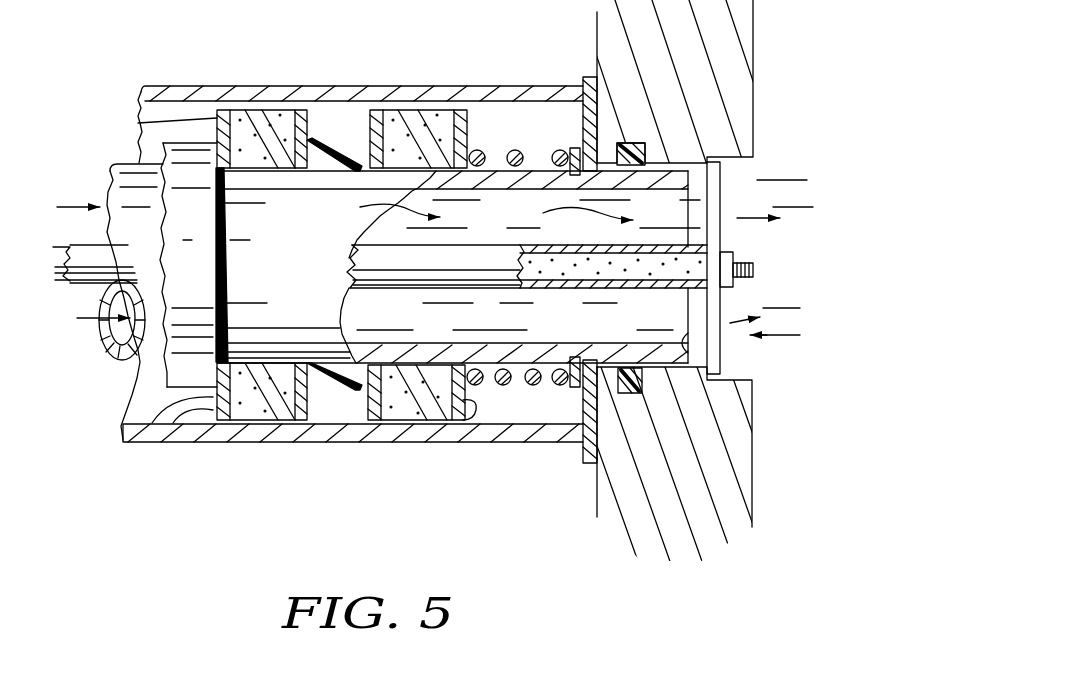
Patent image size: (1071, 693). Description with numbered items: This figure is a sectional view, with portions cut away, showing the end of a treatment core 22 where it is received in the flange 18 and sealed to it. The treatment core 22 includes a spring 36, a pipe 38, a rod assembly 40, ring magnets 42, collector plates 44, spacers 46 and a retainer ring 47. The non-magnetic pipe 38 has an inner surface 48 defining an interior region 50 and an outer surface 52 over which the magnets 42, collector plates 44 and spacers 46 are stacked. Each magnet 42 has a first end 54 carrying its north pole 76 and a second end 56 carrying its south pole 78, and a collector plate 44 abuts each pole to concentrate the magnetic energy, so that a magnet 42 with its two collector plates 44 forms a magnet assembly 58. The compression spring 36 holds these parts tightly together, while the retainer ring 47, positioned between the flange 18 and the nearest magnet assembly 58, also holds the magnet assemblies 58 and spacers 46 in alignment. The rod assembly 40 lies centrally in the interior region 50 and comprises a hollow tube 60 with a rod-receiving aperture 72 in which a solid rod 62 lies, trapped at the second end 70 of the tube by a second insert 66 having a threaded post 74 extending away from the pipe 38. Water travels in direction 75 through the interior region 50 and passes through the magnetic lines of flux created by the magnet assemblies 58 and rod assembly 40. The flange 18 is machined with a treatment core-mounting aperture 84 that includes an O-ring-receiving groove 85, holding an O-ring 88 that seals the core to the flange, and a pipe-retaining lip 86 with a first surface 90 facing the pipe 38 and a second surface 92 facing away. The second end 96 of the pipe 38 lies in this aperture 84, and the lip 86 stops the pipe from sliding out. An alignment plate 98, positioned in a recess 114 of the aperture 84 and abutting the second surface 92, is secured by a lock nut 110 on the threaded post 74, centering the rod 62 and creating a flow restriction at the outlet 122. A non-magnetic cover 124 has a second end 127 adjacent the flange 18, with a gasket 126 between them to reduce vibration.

The flange 18 is at (738, 481).
The treatment core 22 is at (287, 450).
The spring 36 is at (503, 386).
The pipe 38 is at (362, 418).
The rod assembly 40 is at (360, 310).
The ring magnets 42 is at (274, 125).
The collector plates 44 is at (133, 443).
The spacers 46 is at (327, 432).
The retainer rings 47 is at (575, 382).
The inner surface 48 is at (437, 340).
The interior region 50 is at (458, 267).
The outer surface 52 is at (537, 162).
The first end 54 is at (138, 122).
The second end 56 is at (307, 123).
The magnet assembly 58 is at (240, 78).
The hollow tube 60 is at (360, 263).
The solid rod 62 is at (613, 268).
The second insert 66 is at (733, 263).
The second end 70 is at (722, 240).
The rod-receiving aperture 72 is at (548, 288).
The threaded post 74 is at (750, 270).
The direction 75 is at (418, 260).
The north pole 76 is at (168, 447).
The south pole 78 is at (380, 445).
The treatment core-mounting aperture 84 is at (767, 153).
The O-ring-receiving groove 85 is at (650, 143).
The pipe-retaining lip 86 is at (695, 375).
The O-ring 88 is at (597, 463).
The first surface 90 is at (720, 340).
The second surface 92 is at (720, 173).
The second end 96 is at (720, 197).
The alignment plate 98 is at (720, 357).
The lock nut 110 is at (730, 298).
The recess 114 is at (788, 324).
The outlet 122 is at (772, 110).
The cover 124 is at (163, 100).
The gasket 126 is at (588, 77).
The second end 127 is at (510, 443).